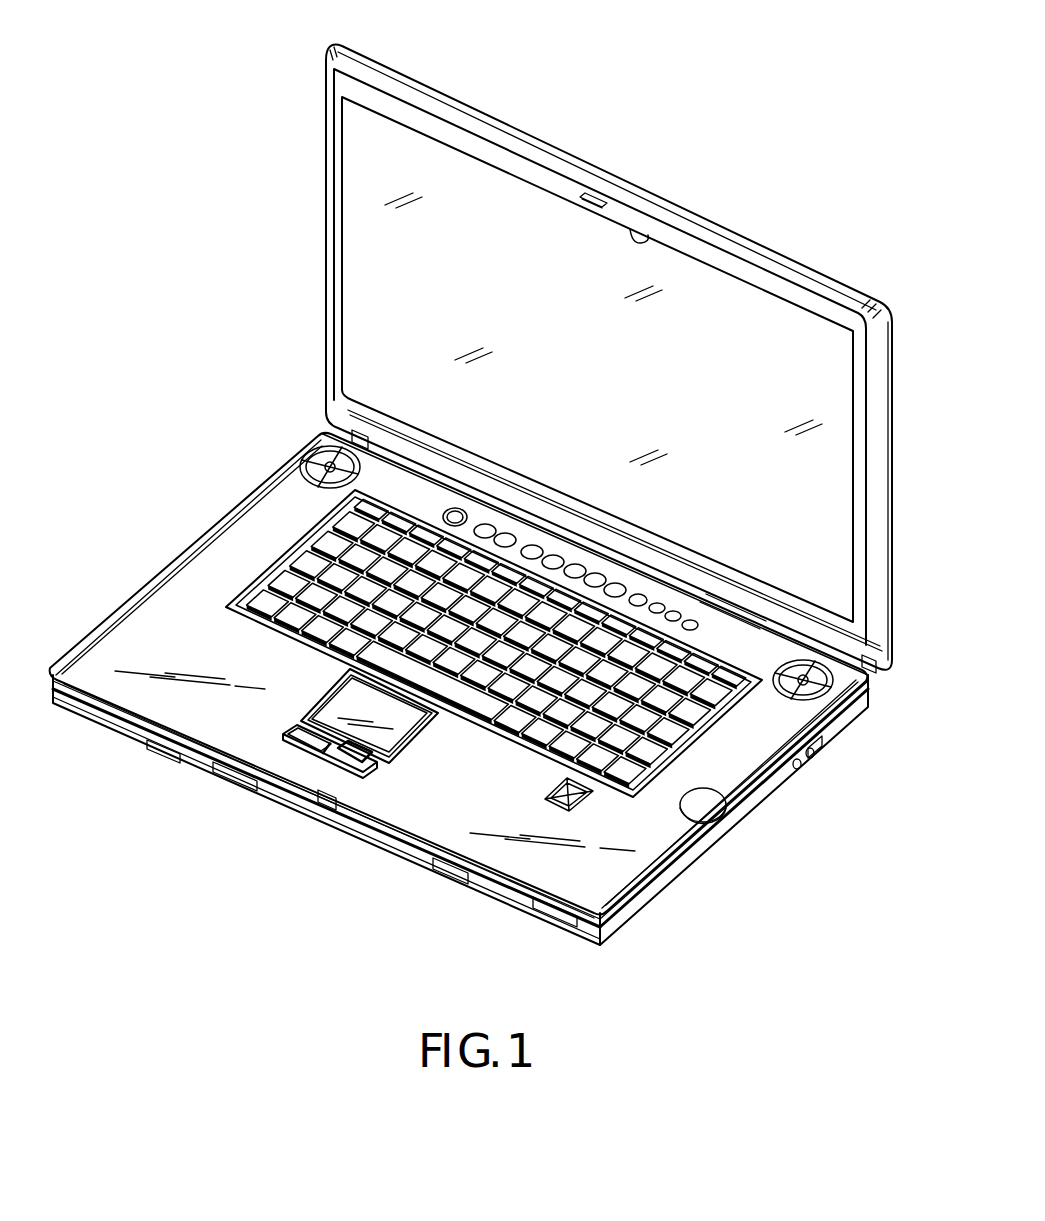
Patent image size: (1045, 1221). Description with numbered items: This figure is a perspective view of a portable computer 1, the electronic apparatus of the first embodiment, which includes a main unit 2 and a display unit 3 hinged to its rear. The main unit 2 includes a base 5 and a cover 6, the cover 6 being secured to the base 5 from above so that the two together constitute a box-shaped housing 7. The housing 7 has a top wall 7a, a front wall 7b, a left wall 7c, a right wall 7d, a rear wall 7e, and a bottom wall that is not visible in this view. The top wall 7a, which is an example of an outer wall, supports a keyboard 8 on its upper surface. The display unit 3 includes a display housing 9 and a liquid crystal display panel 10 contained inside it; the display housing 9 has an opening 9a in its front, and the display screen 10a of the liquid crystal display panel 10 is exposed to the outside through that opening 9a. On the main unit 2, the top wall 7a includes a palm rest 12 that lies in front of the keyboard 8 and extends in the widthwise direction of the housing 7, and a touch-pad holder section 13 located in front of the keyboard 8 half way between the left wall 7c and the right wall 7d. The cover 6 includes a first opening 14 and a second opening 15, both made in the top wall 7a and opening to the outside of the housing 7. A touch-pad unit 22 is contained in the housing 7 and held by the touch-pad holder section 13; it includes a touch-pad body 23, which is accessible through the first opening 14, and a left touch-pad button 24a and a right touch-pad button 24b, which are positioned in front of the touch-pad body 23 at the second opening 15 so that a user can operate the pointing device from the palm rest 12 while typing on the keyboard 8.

The portable computer 1 is at (156, 228).
The main unit 2 is at (192, 530).
The display unit 3 is at (322, 238).
The base 5 is at (785, 785).
The cover 6 is at (690, 856).
The housing 7 is at (607, 880).
The top wall 7a is at (100, 660).
The front wall 7b is at (520, 888).
The left wall 7c is at (137, 596).
The right wall 7d is at (742, 800).
The rear wall 7e is at (727, 607).
The keyboard 8 is at (802, 762).
The display housing 9 is at (776, 258).
The opening 9a is at (644, 228).
The liquid crystal display panel 10 is at (832, 393).
The display screen 10a is at (603, 329).
The palm rest 12 is at (170, 705).
The touch-pad holder section 13 is at (316, 691).
The first opening 14 is at (412, 742).
The second opening 15 is at (380, 768).
The touch-pad unit 22 is at (300, 717).
The touch-pad body 23 is at (347, 695).
The left touch-pad button 24a is at (305, 750).
The right touch-pad button 24b is at (340, 770).